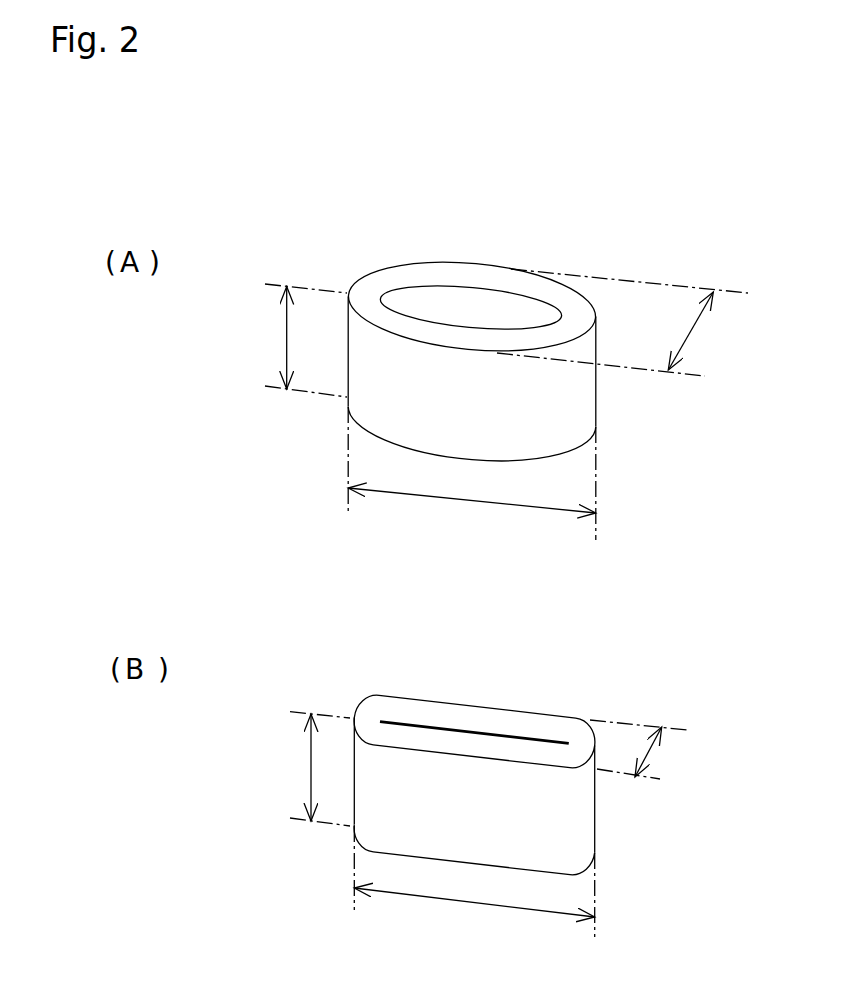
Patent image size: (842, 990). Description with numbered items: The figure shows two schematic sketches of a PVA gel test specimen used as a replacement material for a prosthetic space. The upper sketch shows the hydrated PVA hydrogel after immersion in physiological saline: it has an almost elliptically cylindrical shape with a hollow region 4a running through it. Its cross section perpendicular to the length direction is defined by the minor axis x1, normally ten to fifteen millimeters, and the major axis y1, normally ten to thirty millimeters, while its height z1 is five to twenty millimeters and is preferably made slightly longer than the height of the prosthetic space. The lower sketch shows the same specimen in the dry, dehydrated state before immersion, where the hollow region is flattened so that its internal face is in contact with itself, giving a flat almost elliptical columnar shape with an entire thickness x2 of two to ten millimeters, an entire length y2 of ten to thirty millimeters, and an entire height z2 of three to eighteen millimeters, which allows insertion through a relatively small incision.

The hollow region 4a is at (455, 302).
The minor axis x1 is at (623, 322).
The major axis y1 is at (472, 480).
The height z1 is at (288, 340).
The entire thickness x2 is at (650, 754).
The entire length y2 is at (474, 890).
The entire height z2 is at (297, 769).